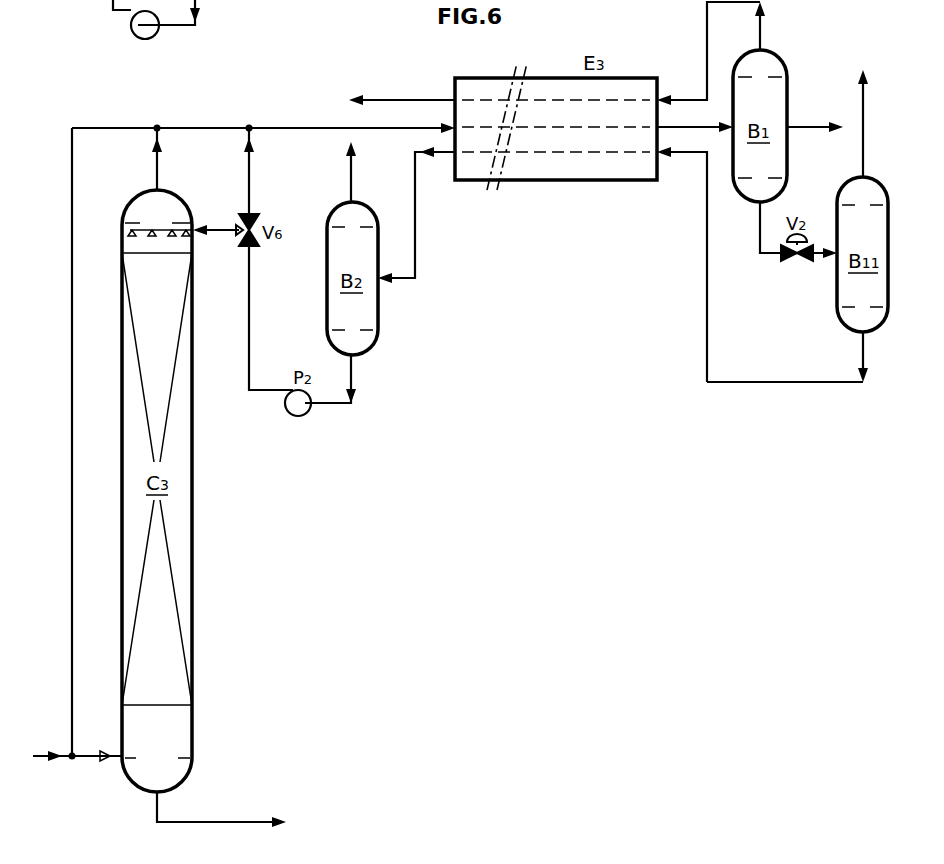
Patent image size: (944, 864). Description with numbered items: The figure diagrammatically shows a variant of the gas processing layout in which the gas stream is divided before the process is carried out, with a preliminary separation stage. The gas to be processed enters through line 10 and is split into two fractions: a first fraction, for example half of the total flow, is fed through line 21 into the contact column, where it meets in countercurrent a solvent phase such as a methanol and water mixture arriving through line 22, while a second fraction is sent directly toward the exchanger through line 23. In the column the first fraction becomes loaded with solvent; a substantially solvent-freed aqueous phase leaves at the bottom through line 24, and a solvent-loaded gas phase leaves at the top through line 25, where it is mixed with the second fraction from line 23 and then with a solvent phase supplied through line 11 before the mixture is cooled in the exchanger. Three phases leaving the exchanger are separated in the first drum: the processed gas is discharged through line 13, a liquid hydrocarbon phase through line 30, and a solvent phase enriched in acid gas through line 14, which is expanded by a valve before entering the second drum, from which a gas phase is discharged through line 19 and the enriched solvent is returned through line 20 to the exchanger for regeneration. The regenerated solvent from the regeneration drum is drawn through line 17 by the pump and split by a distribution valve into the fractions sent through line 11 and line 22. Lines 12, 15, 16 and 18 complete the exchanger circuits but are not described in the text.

The line 10 is at (40, 752).
The line 11 is at (250, 160).
The line from B1 return to exchanger E3 12 is at (700, 130).
The line 13 is at (705, 16).
The line 14 is at (758, 254).
The line from exchanger E3 to B2 15 is at (415, 232).
The gas outlet of B2 16 is at (350, 168).
The line 17 is at (353, 378).
The outlet line from exchanger E3 18 is at (380, 98).
The line 19 is at (858, 108).
The line 20 is at (812, 380).
The line 21 is at (88, 757).
The line 22 is at (218, 231).
The line 23 is at (72, 450).
The line 24 is at (197, 821).
The line 25 is at (157, 158).
The line 30 is at (803, 126).